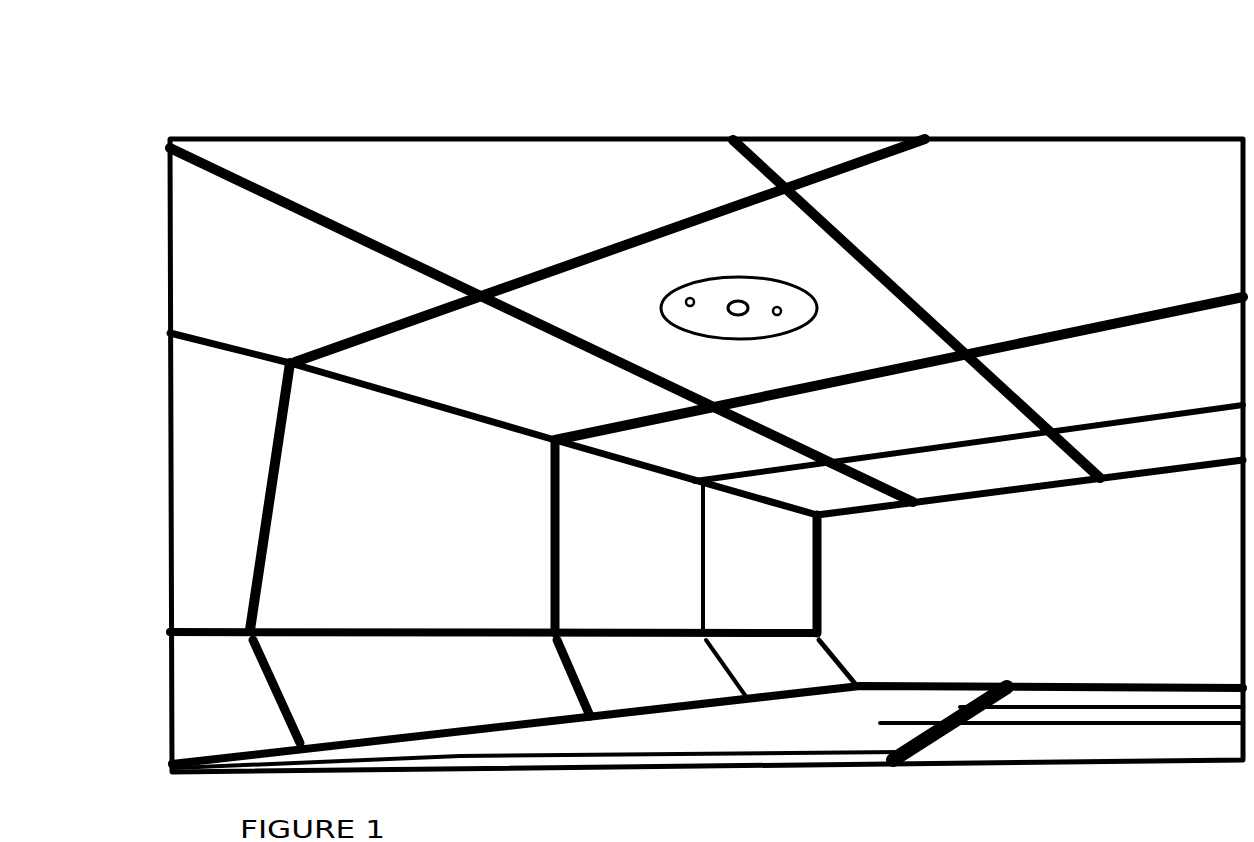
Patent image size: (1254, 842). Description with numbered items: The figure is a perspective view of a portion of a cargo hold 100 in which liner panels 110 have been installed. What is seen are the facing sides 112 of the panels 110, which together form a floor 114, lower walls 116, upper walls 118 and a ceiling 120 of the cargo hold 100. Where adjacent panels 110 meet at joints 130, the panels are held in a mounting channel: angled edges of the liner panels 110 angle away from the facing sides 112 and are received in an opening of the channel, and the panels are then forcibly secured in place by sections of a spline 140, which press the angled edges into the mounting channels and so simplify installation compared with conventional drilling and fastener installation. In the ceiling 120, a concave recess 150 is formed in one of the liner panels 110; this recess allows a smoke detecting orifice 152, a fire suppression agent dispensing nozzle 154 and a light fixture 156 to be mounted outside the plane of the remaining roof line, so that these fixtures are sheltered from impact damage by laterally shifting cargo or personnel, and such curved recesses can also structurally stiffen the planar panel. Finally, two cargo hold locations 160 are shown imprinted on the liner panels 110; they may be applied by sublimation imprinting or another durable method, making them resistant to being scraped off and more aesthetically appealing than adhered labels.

The cargo hold 100 is at (1080, 130).
The liner panels 110 is at (233, 243).
The facing sides 112 is at (437, 180).
The floor 114 is at (626, 742).
The lower walls 116 is at (445, 686).
The upper walls 118 is at (494, 567).
The ceiling 120 is at (602, 169).
The joints 130 is at (698, 200).
The spline 140 is at (893, 300).
The concave recess 150 is at (830, 320).
The smoke detecting orifice 152 is at (691, 298).
The fire suppression agent dispensing nozzle 154 is at (777, 307).
The light fixture 156 is at (736, 315).
The cargo hold locations 160 is at (652, 560).